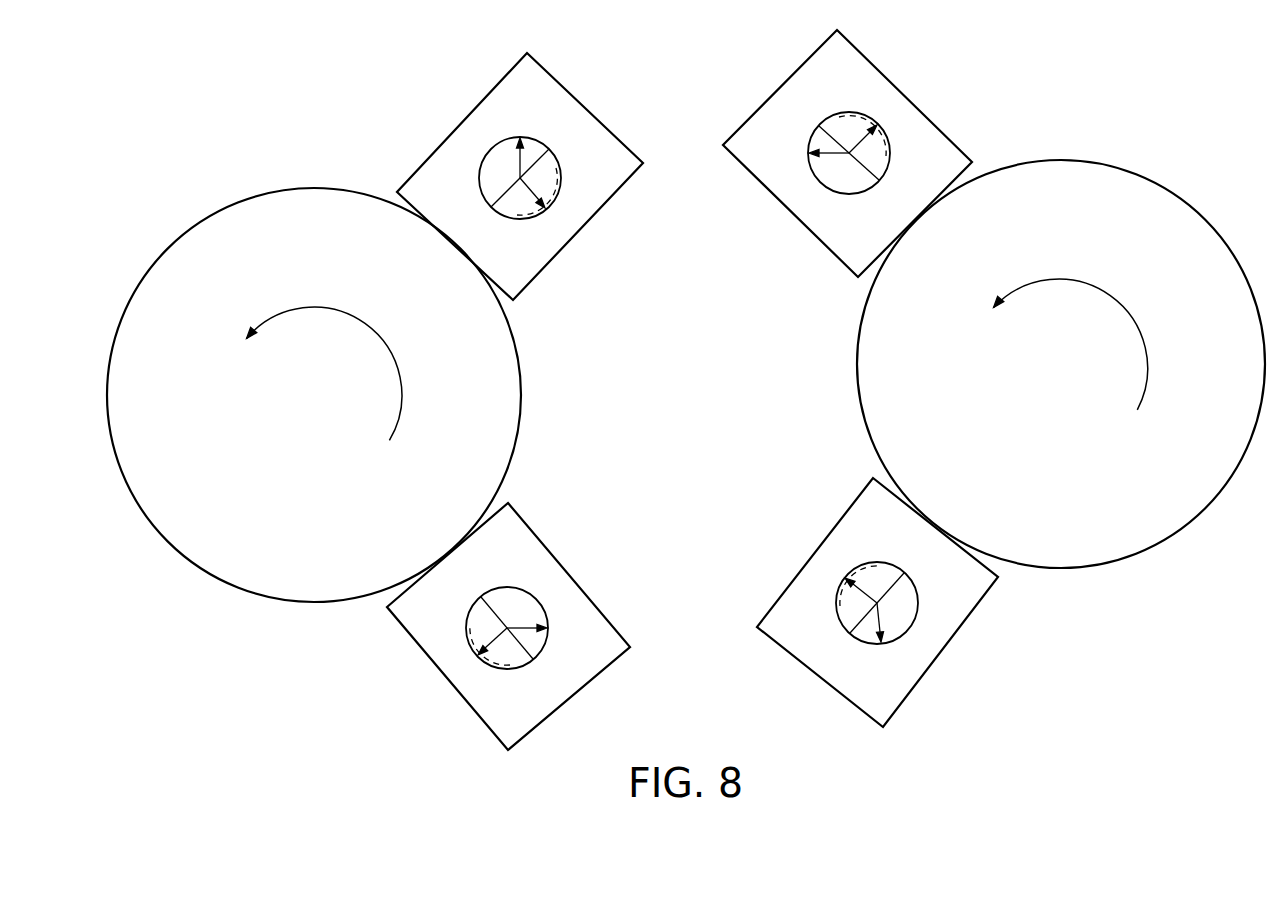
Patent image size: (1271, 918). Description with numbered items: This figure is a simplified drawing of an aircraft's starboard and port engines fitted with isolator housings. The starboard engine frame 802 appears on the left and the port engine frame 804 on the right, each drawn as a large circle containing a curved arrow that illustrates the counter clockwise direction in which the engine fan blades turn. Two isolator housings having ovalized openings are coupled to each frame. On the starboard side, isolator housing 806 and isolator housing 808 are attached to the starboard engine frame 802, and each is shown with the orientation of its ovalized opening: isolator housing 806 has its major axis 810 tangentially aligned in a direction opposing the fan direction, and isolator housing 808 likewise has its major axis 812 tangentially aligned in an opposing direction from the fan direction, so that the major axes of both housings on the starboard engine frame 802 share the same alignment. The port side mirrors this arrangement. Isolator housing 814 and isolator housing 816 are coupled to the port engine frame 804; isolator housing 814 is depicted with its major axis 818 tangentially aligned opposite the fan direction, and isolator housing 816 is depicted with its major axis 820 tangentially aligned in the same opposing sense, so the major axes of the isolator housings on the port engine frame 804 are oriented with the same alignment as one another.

The starboard engine frame 802 is at (265, 192).
The port engine frame 804 is at (1129, 167).
The isolator housing 806 is at (473, 109).
The isolator housing 808 is at (572, 573).
The major axis 810 is at (538, 188).
The major axis 812 is at (497, 637).
The isolator housing 814 is at (933, 122).
The isolator housing 816 is at (827, 532).
The major axis 818 is at (855, 140).
The major axis 820 is at (860, 595).